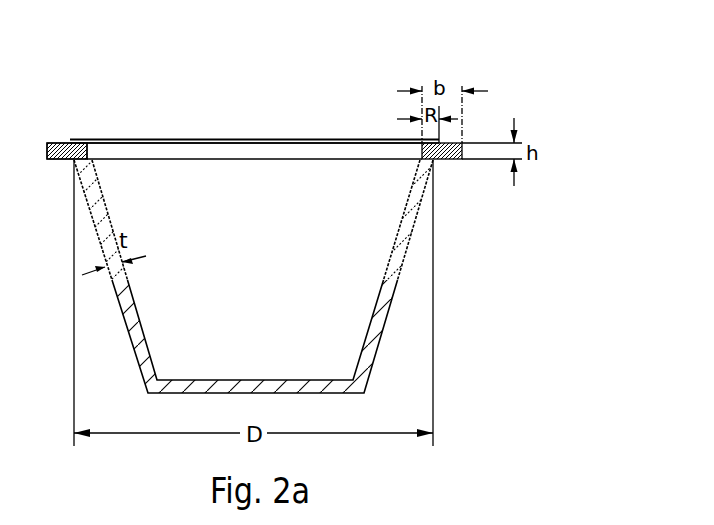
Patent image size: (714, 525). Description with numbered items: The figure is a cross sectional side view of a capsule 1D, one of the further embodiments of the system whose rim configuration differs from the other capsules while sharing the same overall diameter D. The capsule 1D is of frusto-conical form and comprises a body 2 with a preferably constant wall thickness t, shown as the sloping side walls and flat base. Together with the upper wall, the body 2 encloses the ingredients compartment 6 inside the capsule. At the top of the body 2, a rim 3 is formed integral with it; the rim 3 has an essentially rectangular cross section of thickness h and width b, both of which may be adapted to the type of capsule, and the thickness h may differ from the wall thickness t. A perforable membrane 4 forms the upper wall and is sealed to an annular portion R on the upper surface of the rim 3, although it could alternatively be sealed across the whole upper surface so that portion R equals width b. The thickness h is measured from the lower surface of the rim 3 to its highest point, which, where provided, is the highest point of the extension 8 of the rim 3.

The capsule 1D is at (531, 80).
The body 2 is at (377, 330).
The rim 3 is at (64, 162).
The membrane 4 is at (294, 140).
The ingredients compartment 6 is at (373, 229).
The extension 8 is at (63, 142).